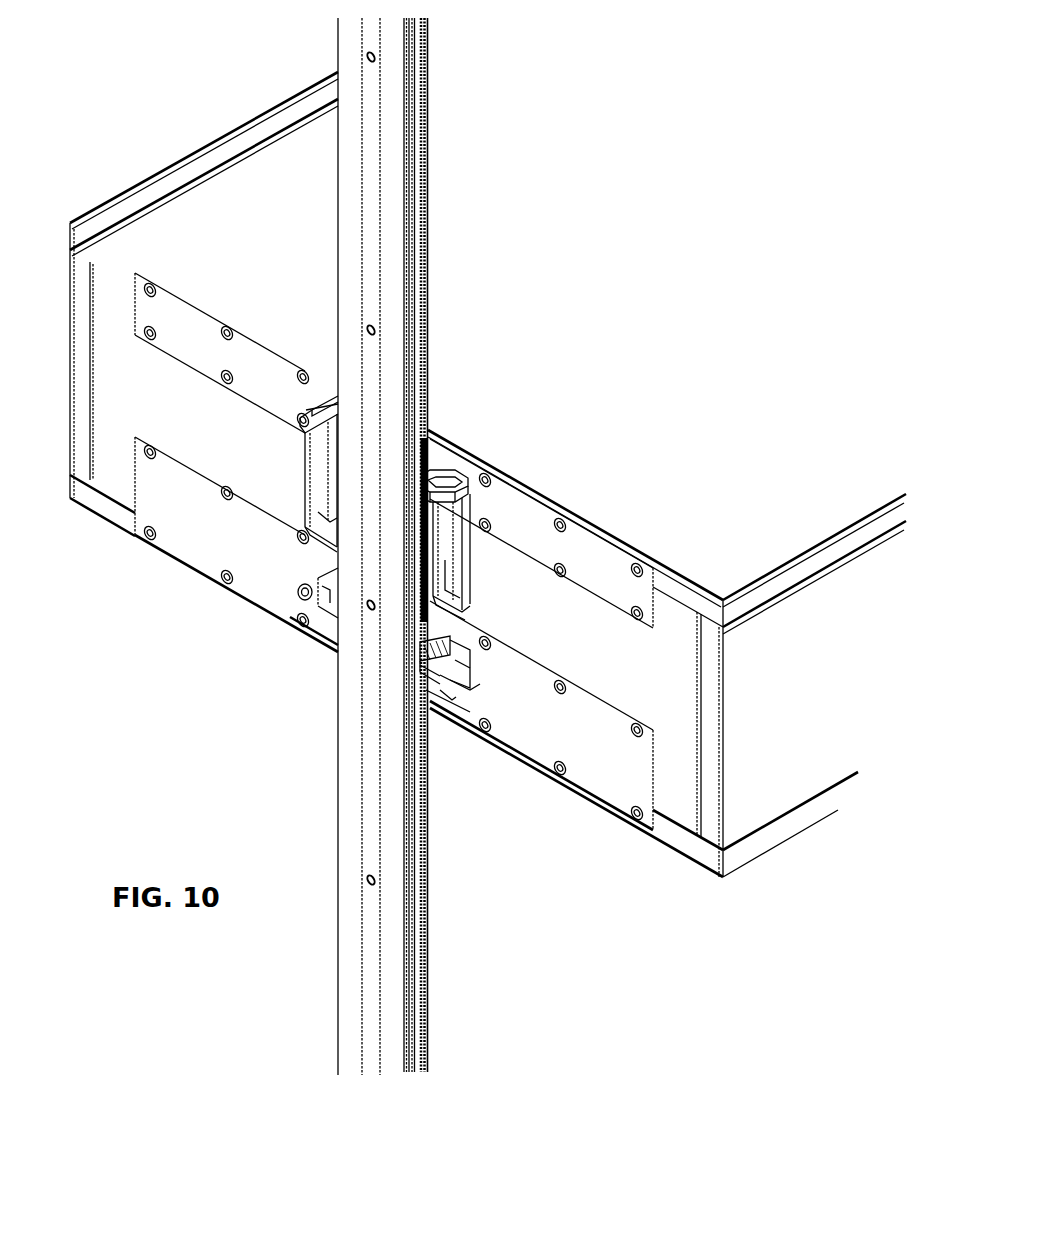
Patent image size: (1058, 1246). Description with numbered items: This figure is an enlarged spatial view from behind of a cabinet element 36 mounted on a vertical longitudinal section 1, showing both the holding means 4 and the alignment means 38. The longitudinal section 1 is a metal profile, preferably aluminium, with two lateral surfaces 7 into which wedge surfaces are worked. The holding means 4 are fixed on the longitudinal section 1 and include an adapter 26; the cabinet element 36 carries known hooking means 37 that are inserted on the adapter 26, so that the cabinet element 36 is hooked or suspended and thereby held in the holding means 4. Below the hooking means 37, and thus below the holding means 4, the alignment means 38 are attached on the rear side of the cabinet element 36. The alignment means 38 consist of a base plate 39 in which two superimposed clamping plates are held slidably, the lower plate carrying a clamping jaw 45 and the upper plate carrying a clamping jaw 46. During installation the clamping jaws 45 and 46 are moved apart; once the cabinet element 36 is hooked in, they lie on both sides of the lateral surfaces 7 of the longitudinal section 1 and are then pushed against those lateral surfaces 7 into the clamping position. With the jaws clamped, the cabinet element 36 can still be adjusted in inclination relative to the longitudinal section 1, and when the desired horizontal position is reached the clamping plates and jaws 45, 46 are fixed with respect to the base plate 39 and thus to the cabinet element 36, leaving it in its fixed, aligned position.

The longitudinal section 1 is at (389, 544).
The lateral surfaces 7 is at (326, 62).
The cabinet element 36 is at (187, 398).
The holding means 4 is at (299, 478).
The clamping jaw 46 is at (324, 652).
The hooking means 37 is at (434, 478).
The adapter 26 is at (524, 501).
The base plate 39 is at (584, 712).
The clamping jaw 45 is at (445, 668).
The alignment means 38 is at (663, 632).